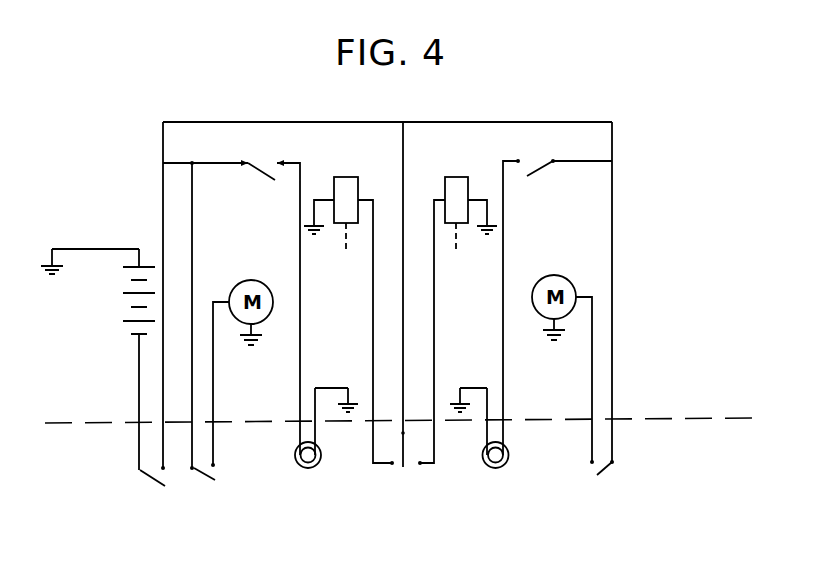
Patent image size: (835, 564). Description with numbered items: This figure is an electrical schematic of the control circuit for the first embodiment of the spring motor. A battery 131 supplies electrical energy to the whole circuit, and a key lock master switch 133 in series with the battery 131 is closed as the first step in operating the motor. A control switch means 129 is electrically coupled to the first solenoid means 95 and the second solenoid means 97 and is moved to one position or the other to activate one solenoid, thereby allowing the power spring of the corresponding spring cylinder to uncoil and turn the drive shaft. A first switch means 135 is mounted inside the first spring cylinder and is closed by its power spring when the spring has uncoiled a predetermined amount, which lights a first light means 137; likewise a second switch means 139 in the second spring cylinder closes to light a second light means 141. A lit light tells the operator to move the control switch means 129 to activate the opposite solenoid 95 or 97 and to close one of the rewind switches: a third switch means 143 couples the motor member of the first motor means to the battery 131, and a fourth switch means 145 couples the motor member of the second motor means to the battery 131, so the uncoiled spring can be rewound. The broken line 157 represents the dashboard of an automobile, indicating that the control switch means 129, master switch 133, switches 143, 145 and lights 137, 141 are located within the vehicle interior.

The first solenoid means 95 is at (347, 183).
The second solenoid means 97 is at (455, 183).
The control switch means 129 is at (415, 476).
The battery 131 is at (112, 308).
The key lock master switch 133 is at (150, 487).
The first switch means 135 is at (266, 153).
The first light means 137 is at (315, 485).
The second switch means 139 is at (548, 139).
The second light means 141 is at (500, 478).
The third switch means 143 is at (215, 486).
The fourth switch means 145 is at (610, 477).
The broken line 157 is at (668, 420).